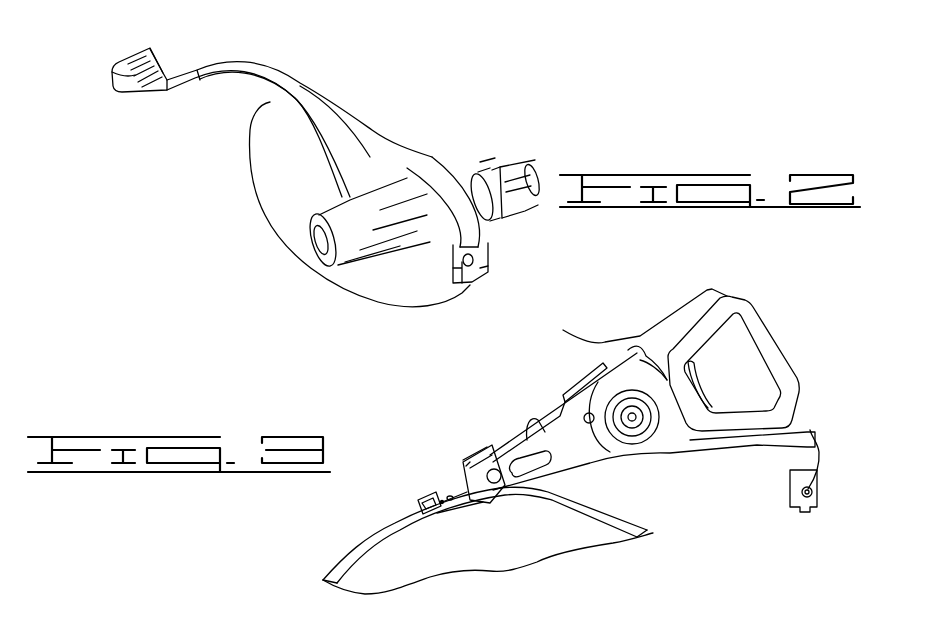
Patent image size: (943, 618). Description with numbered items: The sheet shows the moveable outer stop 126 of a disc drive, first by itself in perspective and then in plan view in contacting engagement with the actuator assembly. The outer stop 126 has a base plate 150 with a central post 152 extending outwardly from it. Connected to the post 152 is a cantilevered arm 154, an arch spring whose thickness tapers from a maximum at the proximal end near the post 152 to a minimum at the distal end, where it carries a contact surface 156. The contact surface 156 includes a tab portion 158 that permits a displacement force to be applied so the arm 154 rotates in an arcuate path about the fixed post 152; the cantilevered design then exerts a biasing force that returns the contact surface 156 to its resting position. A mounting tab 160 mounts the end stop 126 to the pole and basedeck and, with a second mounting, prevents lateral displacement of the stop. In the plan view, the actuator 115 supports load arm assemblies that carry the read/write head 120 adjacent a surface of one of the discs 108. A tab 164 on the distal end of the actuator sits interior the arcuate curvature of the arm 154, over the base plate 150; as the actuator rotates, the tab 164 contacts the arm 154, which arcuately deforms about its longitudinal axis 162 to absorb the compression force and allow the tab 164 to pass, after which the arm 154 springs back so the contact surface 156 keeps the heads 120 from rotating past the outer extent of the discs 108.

In FIG. 3, the discs 108 is at (388, 525).
In FIG. 3, the actuator 115 is at (590, 452).
In FIG. 3, the read/write head 120 is at (420, 500).
In FIG. 2, the outer stop 126 is at (405, 108).
In FIG. 3, the outer stop 126 is at (790, 500).
In FIG. 2, the base plate 150 is at (421, 274).
In FIG. 2, the post 152 is at (357, 258).
In FIG. 2, the cantilevered arm 154 is at (268, 76).
In FIG. 2, the contact surface 156 is at (170, 56).
In FIG. 2, the tab portion 158 is at (157, 96).
In FIG. 2, the mounting tab 160 is at (492, 156).
In FIG. 2, the longitudinal axis 162 is at (275, 154).
In FIG. 3, the tab 164 is at (810, 430).